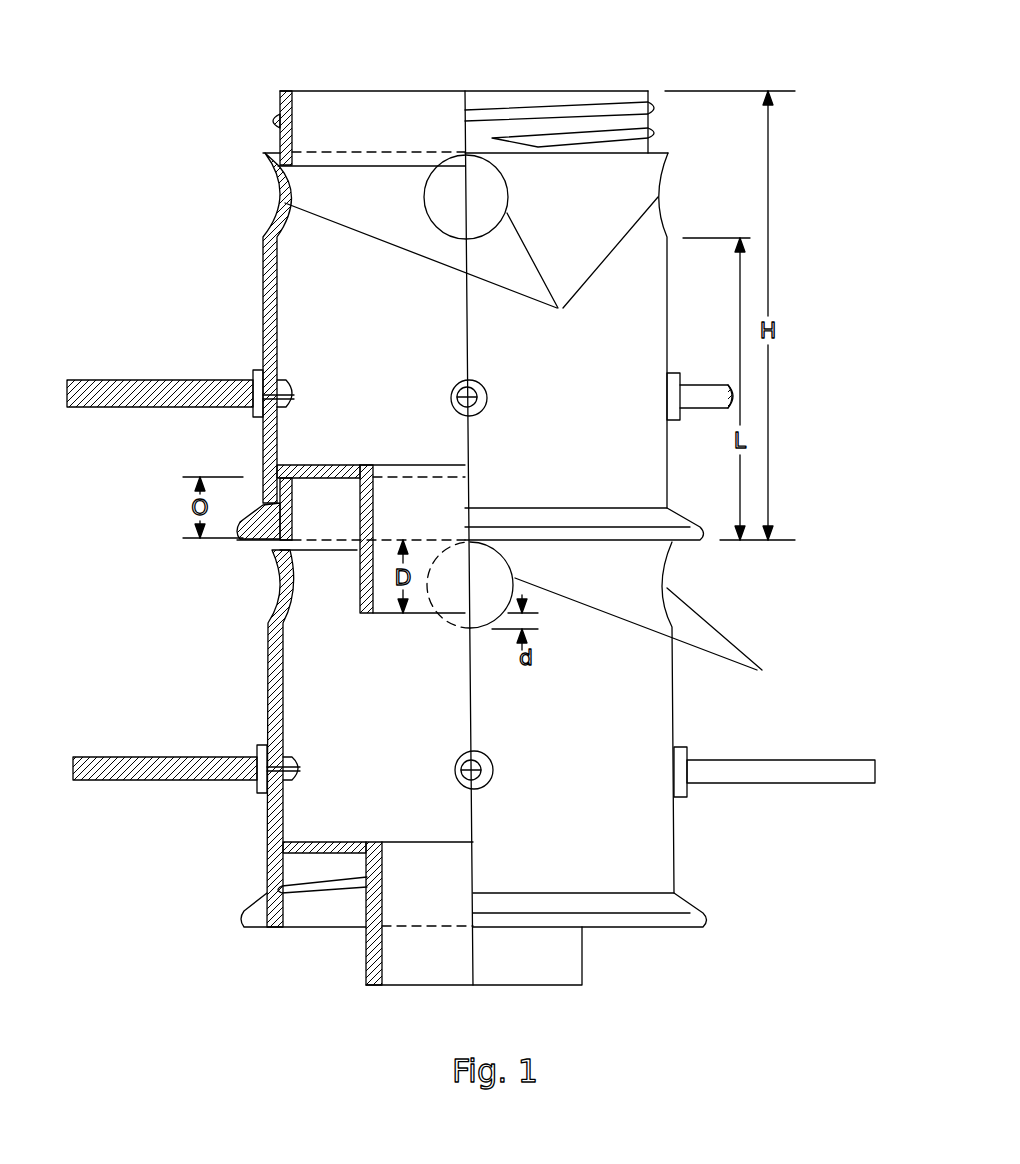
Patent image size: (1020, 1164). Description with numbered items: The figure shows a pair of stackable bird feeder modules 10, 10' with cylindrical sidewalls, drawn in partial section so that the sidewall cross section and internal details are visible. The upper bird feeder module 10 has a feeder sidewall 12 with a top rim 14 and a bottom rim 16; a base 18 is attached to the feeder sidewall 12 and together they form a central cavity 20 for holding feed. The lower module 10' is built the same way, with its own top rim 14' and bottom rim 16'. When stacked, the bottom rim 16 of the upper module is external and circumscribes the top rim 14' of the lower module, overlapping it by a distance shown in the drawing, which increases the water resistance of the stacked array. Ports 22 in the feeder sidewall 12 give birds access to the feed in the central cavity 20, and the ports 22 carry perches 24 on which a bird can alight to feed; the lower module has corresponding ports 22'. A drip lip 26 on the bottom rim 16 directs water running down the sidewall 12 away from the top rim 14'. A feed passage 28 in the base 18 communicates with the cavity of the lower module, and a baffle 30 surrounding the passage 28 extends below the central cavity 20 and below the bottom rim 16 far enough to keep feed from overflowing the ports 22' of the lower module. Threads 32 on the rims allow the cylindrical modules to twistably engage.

The bird feeder module 10 is at (378, 340).
The bird feeder module 10' is at (378, 763).
The feeder sidewall 12 is at (265, 277).
The top rim 14 is at (398, 100).
The top rim 14' is at (302, 545).
The bottom rim 16 is at (213, 575).
The bottom rim 16' is at (474, 767).
The base 18 is at (325, 465).
The central cavity 20 is at (361, 300).
The ports 22 is at (471, 245).
The ports 22' is at (482, 617).
The perches 24 is at (193, 380).
The drip lip 26 is at (675, 540).
The feed passage 28 is at (430, 465).
The baffle 30 is at (374, 614).
The threads 32 is at (270, 118).